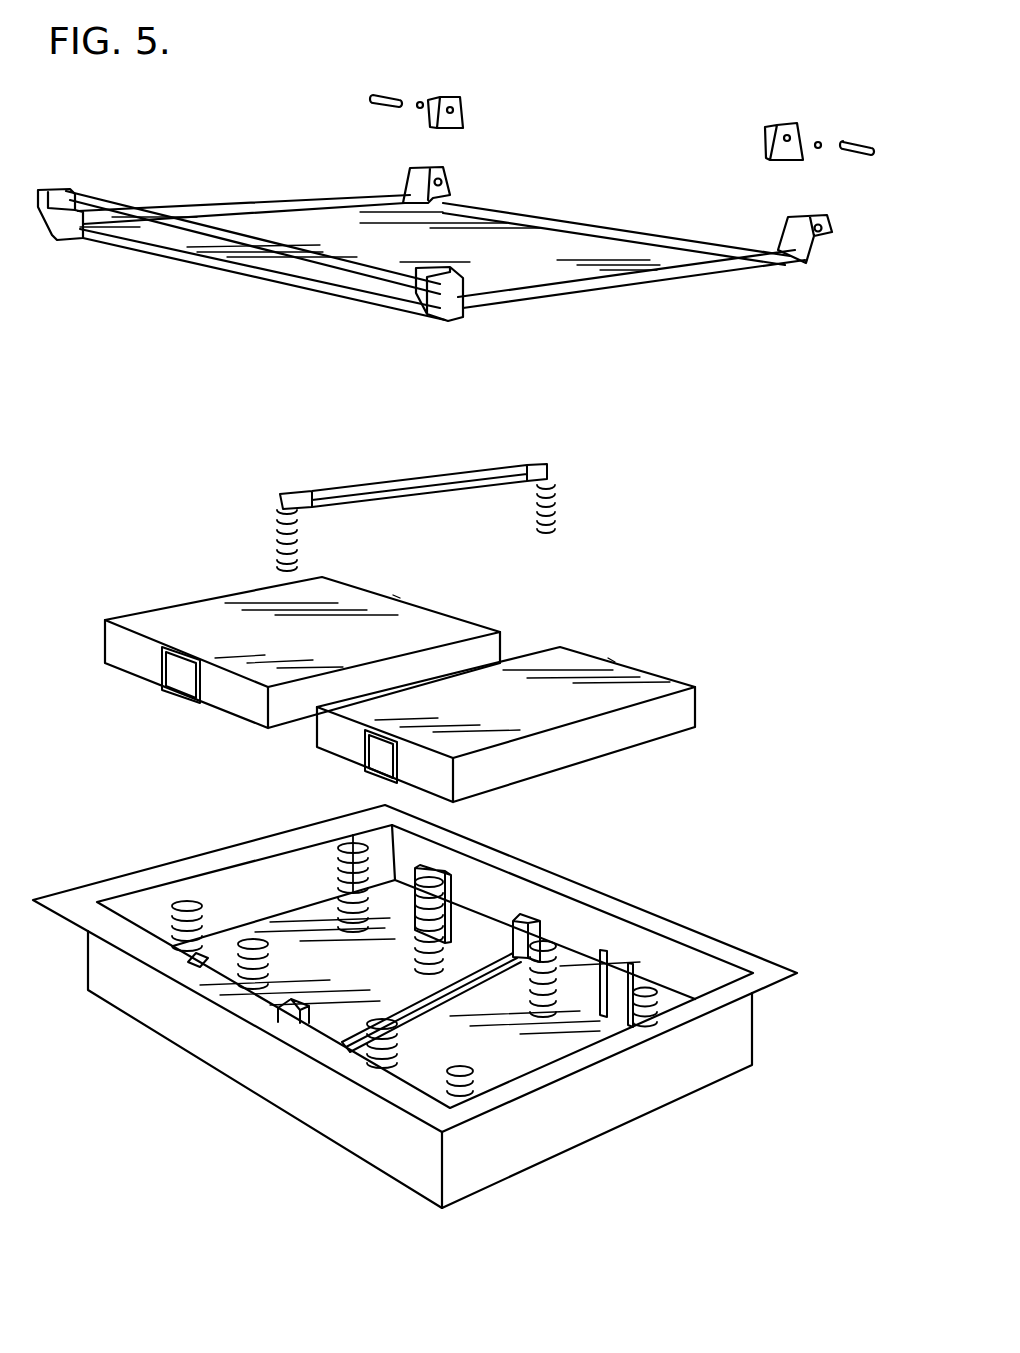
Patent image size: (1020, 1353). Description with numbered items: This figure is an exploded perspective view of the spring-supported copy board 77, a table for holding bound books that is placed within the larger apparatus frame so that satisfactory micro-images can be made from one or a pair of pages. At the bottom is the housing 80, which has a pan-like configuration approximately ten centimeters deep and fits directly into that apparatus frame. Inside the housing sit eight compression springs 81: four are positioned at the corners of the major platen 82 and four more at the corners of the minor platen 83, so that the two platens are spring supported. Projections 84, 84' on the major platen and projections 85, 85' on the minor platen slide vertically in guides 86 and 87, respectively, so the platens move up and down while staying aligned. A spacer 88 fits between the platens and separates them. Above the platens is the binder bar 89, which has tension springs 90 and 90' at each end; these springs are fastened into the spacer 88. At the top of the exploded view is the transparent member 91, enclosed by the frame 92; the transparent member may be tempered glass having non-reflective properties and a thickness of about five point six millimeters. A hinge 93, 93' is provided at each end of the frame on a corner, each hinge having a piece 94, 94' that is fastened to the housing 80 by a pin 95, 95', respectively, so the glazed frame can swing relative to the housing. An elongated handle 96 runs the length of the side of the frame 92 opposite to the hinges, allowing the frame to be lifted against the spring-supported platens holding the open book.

The spring-supported copy board 77 is at (765, 605).
The housing 80 is at (90, 968).
The compression springs 81 is at (343, 882).
The major platen 82 is at (149, 611).
The minor platen 83 is at (677, 681).
The projection 84 is at (430, 595).
The projection 84' is at (161, 677).
The projection 85 is at (631, 658).
The projection 85' is at (358, 761).
The guide 86 is at (449, 909).
The guide 87 is at (601, 971).
The spacer 88 is at (433, 998).
The binder bar 89 is at (463, 483).
The tension spring 90 is at (566, 509).
The tension spring 90' is at (267, 540).
The transparent member 91 is at (552, 264).
The frame 92 is at (644, 238).
The hinge 93 is at (445, 185).
The hinge 93' is at (821, 239).
The hinge piece 94 is at (459, 112).
The hinge piece 94' is at (803, 135).
The pin 95 is at (392, 89).
The pin 95' is at (864, 135).
The elongated handle 96 is at (112, 206).